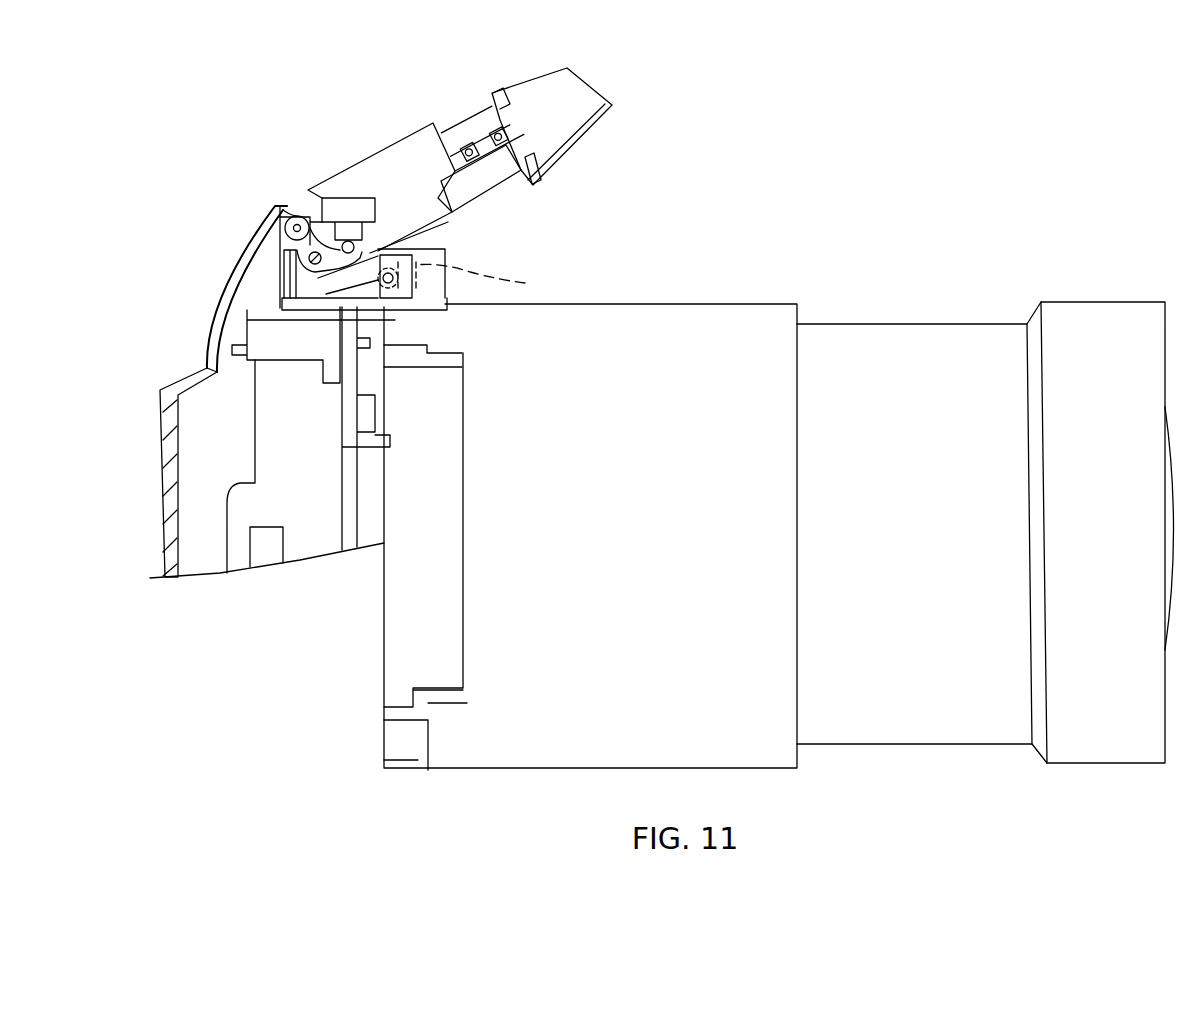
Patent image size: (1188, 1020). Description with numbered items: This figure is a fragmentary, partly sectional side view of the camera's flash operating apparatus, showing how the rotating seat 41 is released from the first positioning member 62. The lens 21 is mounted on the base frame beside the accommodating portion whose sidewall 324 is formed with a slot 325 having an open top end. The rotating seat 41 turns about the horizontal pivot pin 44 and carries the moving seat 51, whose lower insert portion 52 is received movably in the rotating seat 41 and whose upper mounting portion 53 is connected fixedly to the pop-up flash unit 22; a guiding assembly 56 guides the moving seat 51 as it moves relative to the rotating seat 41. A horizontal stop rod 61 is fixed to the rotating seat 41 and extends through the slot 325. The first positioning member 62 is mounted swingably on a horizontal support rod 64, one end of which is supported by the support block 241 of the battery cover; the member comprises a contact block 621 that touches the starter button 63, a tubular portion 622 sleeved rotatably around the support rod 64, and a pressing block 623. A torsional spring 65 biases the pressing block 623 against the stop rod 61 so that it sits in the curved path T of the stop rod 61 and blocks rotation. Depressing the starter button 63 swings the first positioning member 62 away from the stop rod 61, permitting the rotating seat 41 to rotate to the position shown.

The lens 21 is at (907, 324).
The pop-up flash unit 22 is at (580, 140).
The rotating seat 41 is at (412, 130).
The horizontal pivot pin 44 is at (290, 213).
The moving seat 51 is at (528, 77).
The lower insert portion 52 is at (482, 122).
The upper mounting portion 53 is at (553, 75).
The guiding assembly 56 is at (490, 190).
The horizontal stop rod 61 is at (280, 257).
The first positioning member 62 is at (355, 245).
The starter button 63 is at (340, 203).
The horizontal support rod 64 is at (392, 255).
The torsional spring 65 is at (420, 312).
The support block 241 is at (445, 300).
The sidewall 324 is at (452, 250).
The slot 325 is at (277, 230).
The contact block 621 is at (345, 242).
The tubular portion 622 is at (488, 279).
The pressing block 623 is at (283, 290).
The curved path T is at (233, 242).